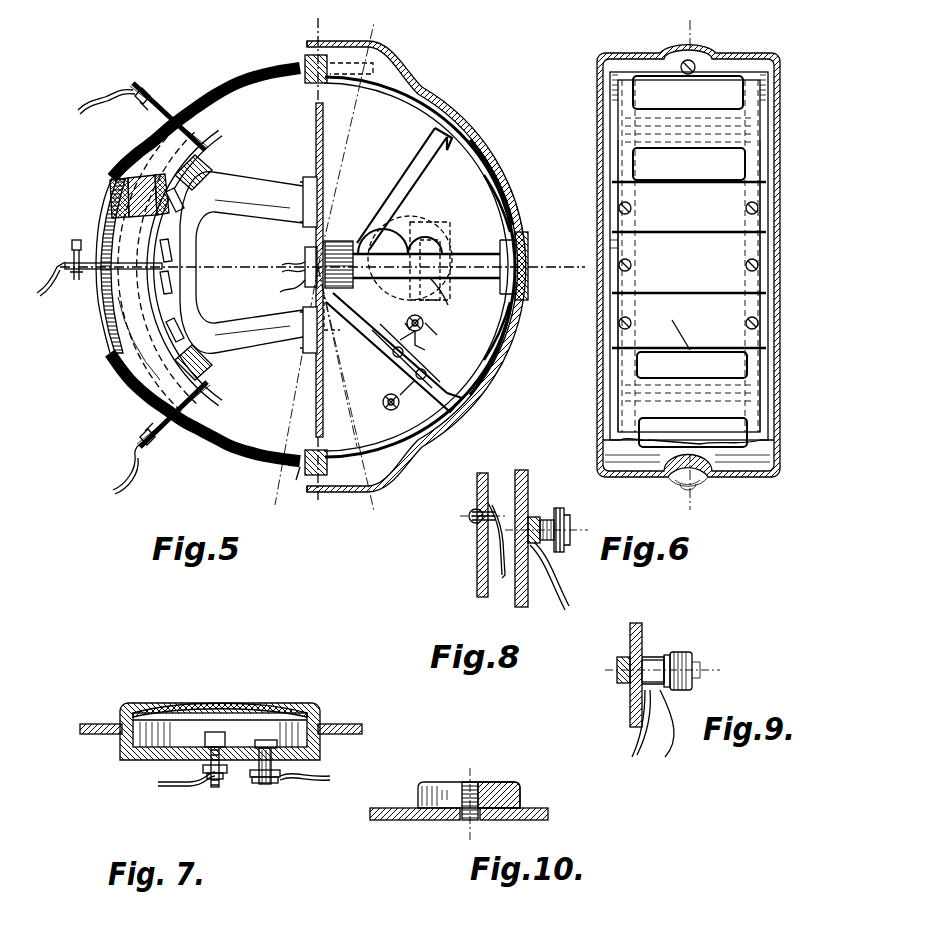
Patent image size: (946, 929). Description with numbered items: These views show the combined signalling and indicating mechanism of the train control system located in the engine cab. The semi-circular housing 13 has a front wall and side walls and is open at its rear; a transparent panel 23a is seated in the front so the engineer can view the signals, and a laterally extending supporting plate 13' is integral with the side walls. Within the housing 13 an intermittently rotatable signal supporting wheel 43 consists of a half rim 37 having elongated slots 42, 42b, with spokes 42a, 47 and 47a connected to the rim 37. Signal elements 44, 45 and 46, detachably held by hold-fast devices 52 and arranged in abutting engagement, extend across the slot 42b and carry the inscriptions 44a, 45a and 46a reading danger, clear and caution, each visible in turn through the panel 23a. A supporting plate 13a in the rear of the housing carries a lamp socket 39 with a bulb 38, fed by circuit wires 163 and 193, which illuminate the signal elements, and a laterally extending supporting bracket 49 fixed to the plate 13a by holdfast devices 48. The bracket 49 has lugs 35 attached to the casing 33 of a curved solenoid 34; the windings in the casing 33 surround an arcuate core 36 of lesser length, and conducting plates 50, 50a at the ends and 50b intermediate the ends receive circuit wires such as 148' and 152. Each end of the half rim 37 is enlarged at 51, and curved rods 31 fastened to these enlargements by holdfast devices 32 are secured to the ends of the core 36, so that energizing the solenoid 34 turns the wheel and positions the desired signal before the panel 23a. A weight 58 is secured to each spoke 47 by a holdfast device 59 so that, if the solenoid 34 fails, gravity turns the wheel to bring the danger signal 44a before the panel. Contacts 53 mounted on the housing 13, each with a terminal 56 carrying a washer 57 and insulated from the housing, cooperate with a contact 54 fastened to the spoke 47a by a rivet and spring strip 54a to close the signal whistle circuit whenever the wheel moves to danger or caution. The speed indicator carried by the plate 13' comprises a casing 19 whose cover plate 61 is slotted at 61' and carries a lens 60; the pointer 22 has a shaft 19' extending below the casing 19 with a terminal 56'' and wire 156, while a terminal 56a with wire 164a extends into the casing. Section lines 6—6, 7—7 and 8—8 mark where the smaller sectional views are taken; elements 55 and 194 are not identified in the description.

In FIG. 5, the section line 6 is at (382, 333).
In FIG. 5, the section line 7 is at (458, 360).
In FIG. 5, the section line 8 is at (425, 232).
In FIG. 5, the housing 13 is at (416, 266).
In FIG. 6, the housing 13 is at (688, 245).
In FIG. 8, the housing 13 is at (541, 532).
In FIG. 9, the housing 13 is at (657, 665).
In FIG. 7, the supporting plate 13' is at (243, 739).
In FIG. 5, the supporting plate 13a is at (335, 405).
In FIG. 7, the casing 19 is at (321, 722).
In FIG. 7, the pointer shaft 19' is at (173, 715).
In FIG. 7, the pointer 22 is at (230, 780).
In FIG. 5, the transparent panel 23a is at (530, 266).
In FIG. 6, the transparent panel 23a is at (612, 256).
In FIG. 5, the curved rods 31 is at (138, 155).
In FIG. 5, the holdfast devices 32 is at (305, 58).
In FIG. 6, the holdfast devices 32 is at (698, 58).
In FIG. 5, the casing 33 is at (115, 150).
In FIG. 5, the curved solenoid 34 is at (108, 198).
In FIG. 5, the lugs 35 is at (205, 165).
In FIG. 5, the arcuate core 36 is at (108, 190).
In FIG. 5, the half rim 37 is at (372, 90).
In FIG. 6, the half rim 37 is at (620, 130).
In FIG. 5, the bulb 38 is at (420, 234).
In FIG. 5, the lamp socket 39 is at (338, 241).
In FIG. 5, the elongated slots 42 is at (410, 96).
In FIG. 6, the elongated slots 42 is at (690, 261).
In FIG. 5, the spokes 42a is at (400, 178).
In FIG. 5, the elongated slot 42b is at (482, 167).
In FIG. 6, the elongated slot 42b is at (690, 265).
In FIG. 6, the signal supporting wheel 43 is at (615, 155).
In FIG. 5, the signal element 44 is at (505, 210).
In FIG. 6, the signal element 44 is at (625, 192).
In FIG. 6, the danger indication 44a is at (730, 195).
In FIG. 5, the signaling element 45 is at (462, 256).
In FIG. 6, the signaling element 45 is at (615, 282).
In FIG. 6, the clear inscription 45a is at (676, 276).
In FIG. 5, the signaling element 46 is at (512, 322).
In FIG. 6, the signaling element 46 is at (615, 305).
In FIG. 6, the caution inscription 46a is at (674, 347).
In FIG. 5, the spokes 47 is at (463, 250).
In FIG. 10, the spokes 47 is at (412, 822).
In FIG. 5, the spoke 47a is at (355, 360).
In FIG. 8, the spoke 47a is at (476, 556).
In FIG. 5, the holdfast devices 48 is at (318, 198).
In FIG. 5, the supporting bracket 49 is at (242, 195).
In FIG. 5, the conducting plate 50 is at (150, 100).
In FIG. 5, the conducting plate 50a is at (155, 440).
In FIG. 5, the conducting plate 50b is at (118, 290).
In FIG. 5, the enlargements 51 is at (318, 487).
In FIG. 6, the hold-fast devices 52 is at (760, 210).
In FIG. 5, the contacts 53 is at (424, 323).
In FIG. 9, the contacts 53 is at (618, 672).
In FIG. 5, the contact 54 is at (384, 400).
In FIG. 8, the contact 54 is at (503, 575).
In FIG. 5, the spring strip 54a is at (395, 360).
In FIG. 8, the spring strip 54a is at (505, 520).
In FIG. 8, the nut 55 is at (543, 517).
In FIG. 8, the terminal 56 is at (580, 526).
In FIG. 9, the terminal 56 is at (713, 671).
In FIG. 7, the terminal 56'' is at (207, 796).
In FIG. 7, the terminal 56a is at (278, 790).
In FIG. 8, the washer 57 is at (549, 576).
In FIG. 9, the washer 57 is at (644, 731).
In FIG. 5, the weight 58 is at (445, 291).
In FIG. 10, the weight 58 is at (500, 782).
In FIG. 10, the holdfast device 59 is at (468, 782).
In FIG. 7, the lens 60 is at (260, 702).
In FIG. 7, the cover plate 61 is at (205, 758).
In FIG. 7, the slot 61' is at (238, 697).
In FIG. 5, the circuit wire 148' is at (87, 83).
In FIG. 5, the circuit wire 152 is at (58, 295).
In FIG. 7, the circuit wire 156 is at (160, 790).
In FIG. 5, the circuit wire 163 is at (282, 294).
In FIG. 7, the circuit wire 164a is at (330, 777).
In FIG. 5, the circuit wire 193 is at (282, 278).
In FIG. 5, the spring 194 is at (120, 492).